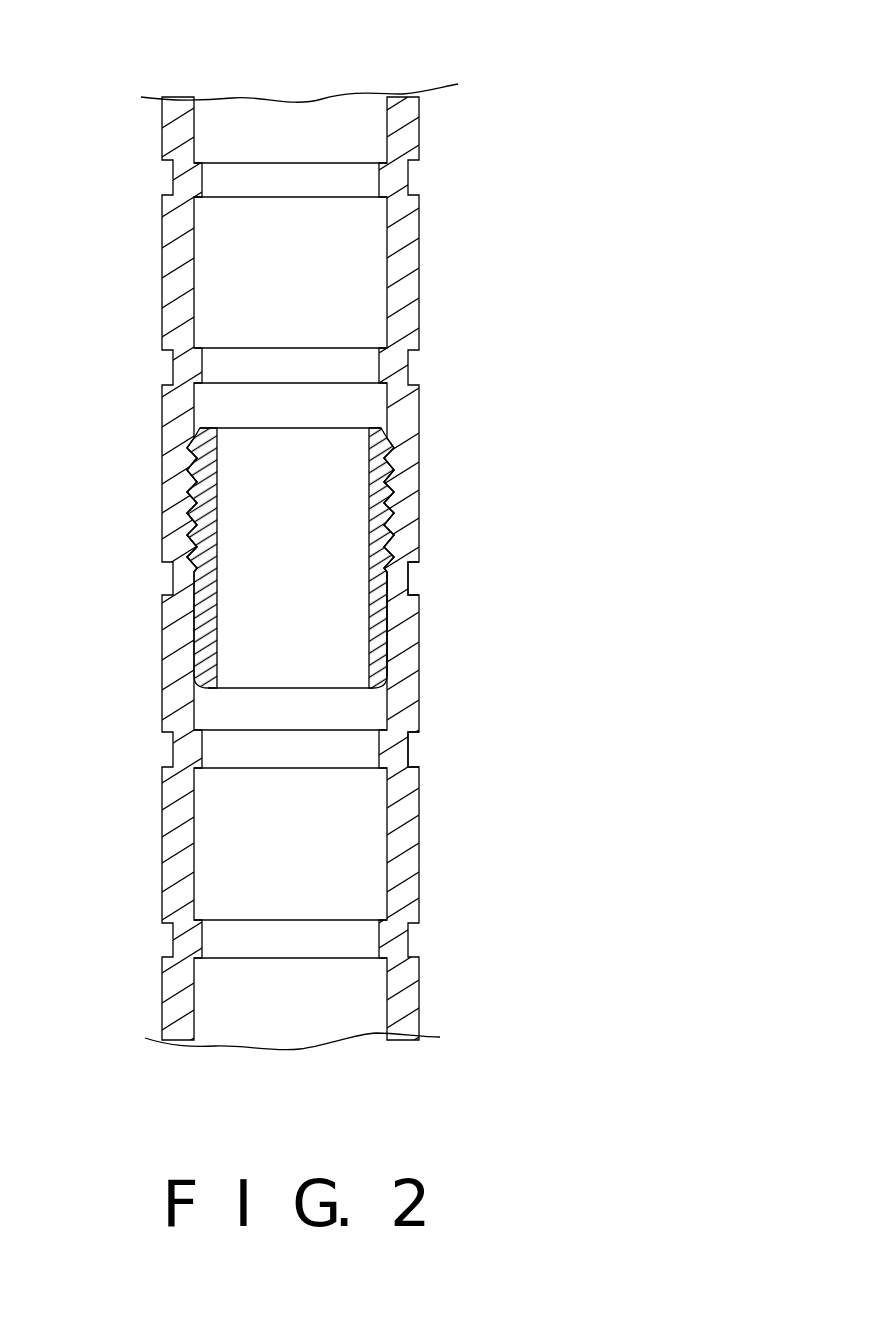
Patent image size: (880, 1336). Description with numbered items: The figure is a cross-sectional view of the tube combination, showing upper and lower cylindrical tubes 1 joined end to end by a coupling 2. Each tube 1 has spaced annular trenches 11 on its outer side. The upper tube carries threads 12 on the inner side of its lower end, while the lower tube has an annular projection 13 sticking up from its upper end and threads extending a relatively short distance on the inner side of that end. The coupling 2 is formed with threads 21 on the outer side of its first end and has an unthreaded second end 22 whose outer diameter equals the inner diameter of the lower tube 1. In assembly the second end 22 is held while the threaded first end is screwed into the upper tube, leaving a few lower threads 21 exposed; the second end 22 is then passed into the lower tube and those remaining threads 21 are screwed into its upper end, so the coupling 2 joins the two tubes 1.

The cylindrical tube 1 is at (362, 107).
The coupling 2 is at (423, 425).
The annular trench 11 is at (413, 747).
The threads 12 is at (187, 470).
The annular projection 13 is at (400, 578).
The threads 21 is at (389, 507).
The second end 22 is at (385, 642).